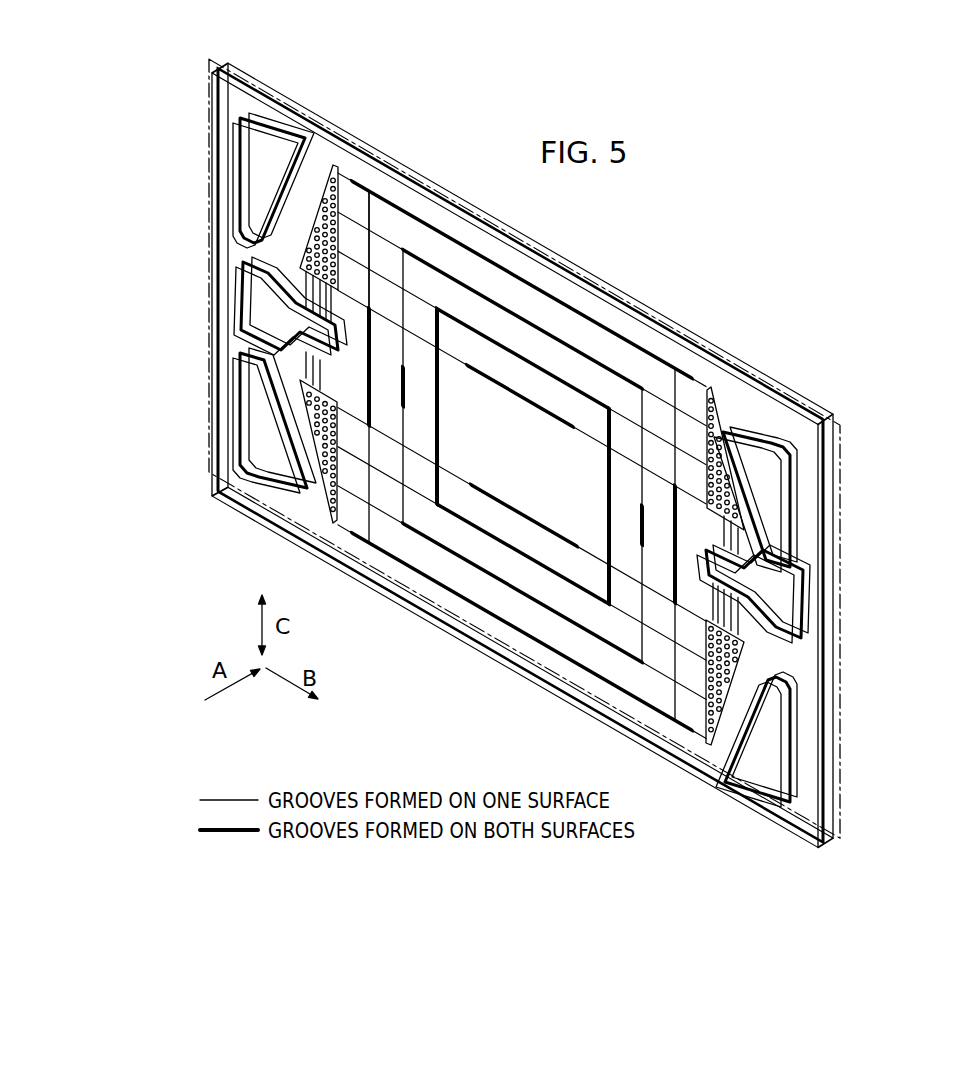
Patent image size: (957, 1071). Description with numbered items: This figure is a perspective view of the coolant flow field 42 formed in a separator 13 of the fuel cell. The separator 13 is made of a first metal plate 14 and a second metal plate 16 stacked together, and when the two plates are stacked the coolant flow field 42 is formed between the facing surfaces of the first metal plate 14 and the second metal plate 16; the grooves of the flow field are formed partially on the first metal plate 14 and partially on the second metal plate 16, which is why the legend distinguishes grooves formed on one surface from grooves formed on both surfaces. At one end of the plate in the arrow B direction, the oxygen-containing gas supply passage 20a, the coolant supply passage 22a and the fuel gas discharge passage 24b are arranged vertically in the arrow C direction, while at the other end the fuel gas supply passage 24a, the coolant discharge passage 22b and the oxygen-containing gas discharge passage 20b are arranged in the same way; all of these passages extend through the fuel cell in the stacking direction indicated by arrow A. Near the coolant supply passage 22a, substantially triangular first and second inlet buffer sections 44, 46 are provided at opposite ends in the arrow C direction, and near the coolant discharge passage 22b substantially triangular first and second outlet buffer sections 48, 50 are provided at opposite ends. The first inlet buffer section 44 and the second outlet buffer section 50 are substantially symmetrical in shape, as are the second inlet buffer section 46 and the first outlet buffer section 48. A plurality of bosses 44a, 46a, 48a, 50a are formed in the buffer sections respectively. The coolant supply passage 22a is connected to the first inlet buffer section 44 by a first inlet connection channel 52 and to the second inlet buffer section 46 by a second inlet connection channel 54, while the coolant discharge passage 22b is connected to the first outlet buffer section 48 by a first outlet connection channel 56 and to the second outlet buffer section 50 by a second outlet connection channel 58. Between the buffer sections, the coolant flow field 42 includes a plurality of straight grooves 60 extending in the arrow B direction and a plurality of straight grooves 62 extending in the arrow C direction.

The separator 13 is at (903, 452).
The first metal plate 14 is at (843, 472).
The second metal plate 16 is at (838, 443).
The oxygen-containing gas supply passage 20a is at (262, 168).
The oxygen-containing gas discharge passage 20b is at (787, 725).
The coolant supply passage 22a is at (290, 306).
The coolant discharge passage 22b is at (753, 594).
The fuel gas supply passage 24a is at (798, 532).
The fuel gas discharge passage 24b is at (262, 437).
The coolant flow field 42 is at (708, 292).
The first inlet buffer section 44 is at (333, 487).
The bosses 44a is at (340, 508).
The second inlet buffer section 46 is at (326, 208).
The bosses 46a is at (340, 236).
The first outlet buffer section 48 is at (724, 700).
The bosses 48a is at (705, 702).
The second outlet buffer section 50 is at (722, 416).
The bosses 50a is at (707, 440).
The first inlet connection channel 52 is at (312, 398).
The second inlet connection channel 54 is at (303, 290).
The first outlet connection channel 56 is at (712, 612).
The second outlet connection channel 58 is at (715, 538).
The straight grooves 60 is at (556, 643).
The straight grooves 62 is at (370, 462).